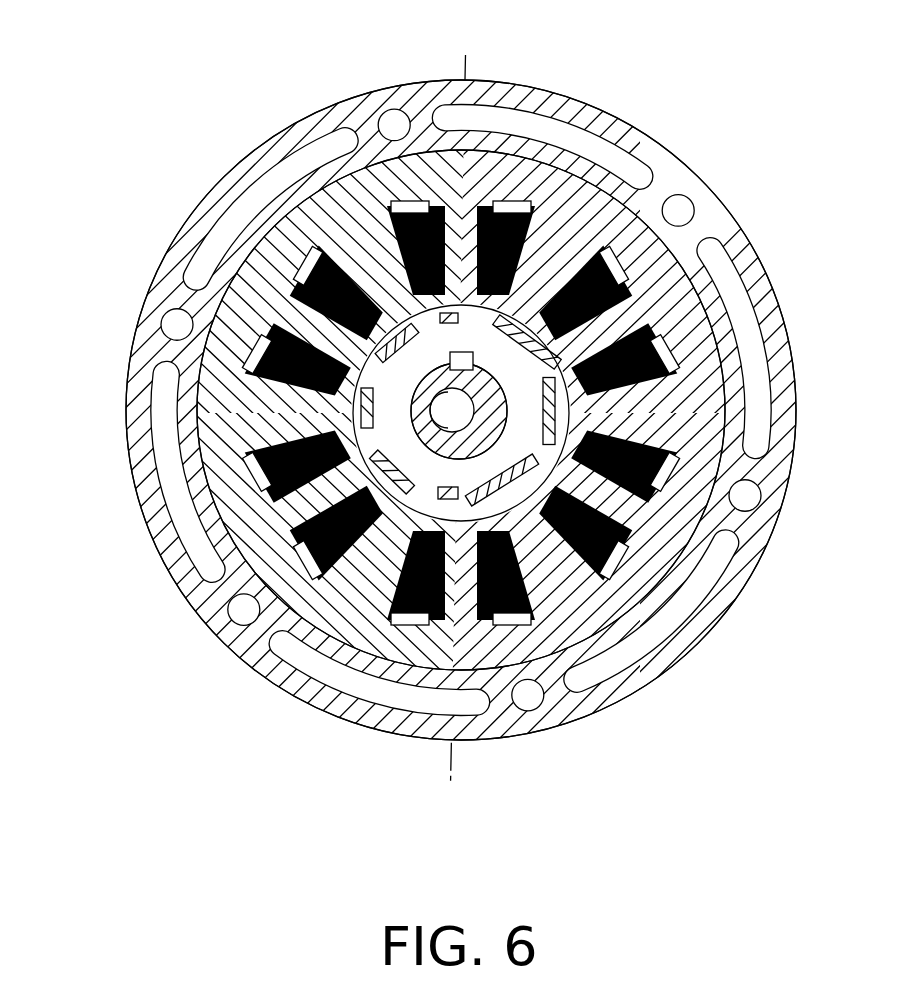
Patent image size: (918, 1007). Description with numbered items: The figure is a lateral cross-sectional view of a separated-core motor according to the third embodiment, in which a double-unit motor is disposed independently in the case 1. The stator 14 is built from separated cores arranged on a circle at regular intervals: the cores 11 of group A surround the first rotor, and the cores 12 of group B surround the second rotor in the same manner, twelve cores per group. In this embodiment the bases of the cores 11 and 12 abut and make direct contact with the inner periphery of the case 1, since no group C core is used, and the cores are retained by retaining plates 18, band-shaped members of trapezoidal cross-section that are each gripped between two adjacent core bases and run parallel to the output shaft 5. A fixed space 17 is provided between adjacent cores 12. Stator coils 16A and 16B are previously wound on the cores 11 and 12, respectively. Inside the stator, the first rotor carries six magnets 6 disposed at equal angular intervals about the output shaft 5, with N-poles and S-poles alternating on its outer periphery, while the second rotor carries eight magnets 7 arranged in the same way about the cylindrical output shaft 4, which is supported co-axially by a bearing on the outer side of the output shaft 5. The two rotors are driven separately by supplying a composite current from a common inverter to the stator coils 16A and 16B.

The case 1 is at (753, 540).
The output shaft 4 is at (556, 423).
The output shaft 5 is at (436, 455).
The magnets 6 is at (504, 487).
The magnets 7 is at (255, 468).
The core 11 is at (610, 213).
The core 12 is at (317, 193).
The stator 14 is at (501, 381).
The stator coil 16A is at (667, 498).
The stator coil 16B is at (268, 342).
The fixed space 17 is at (283, 391).
The retaining plate 18 is at (523, 200).